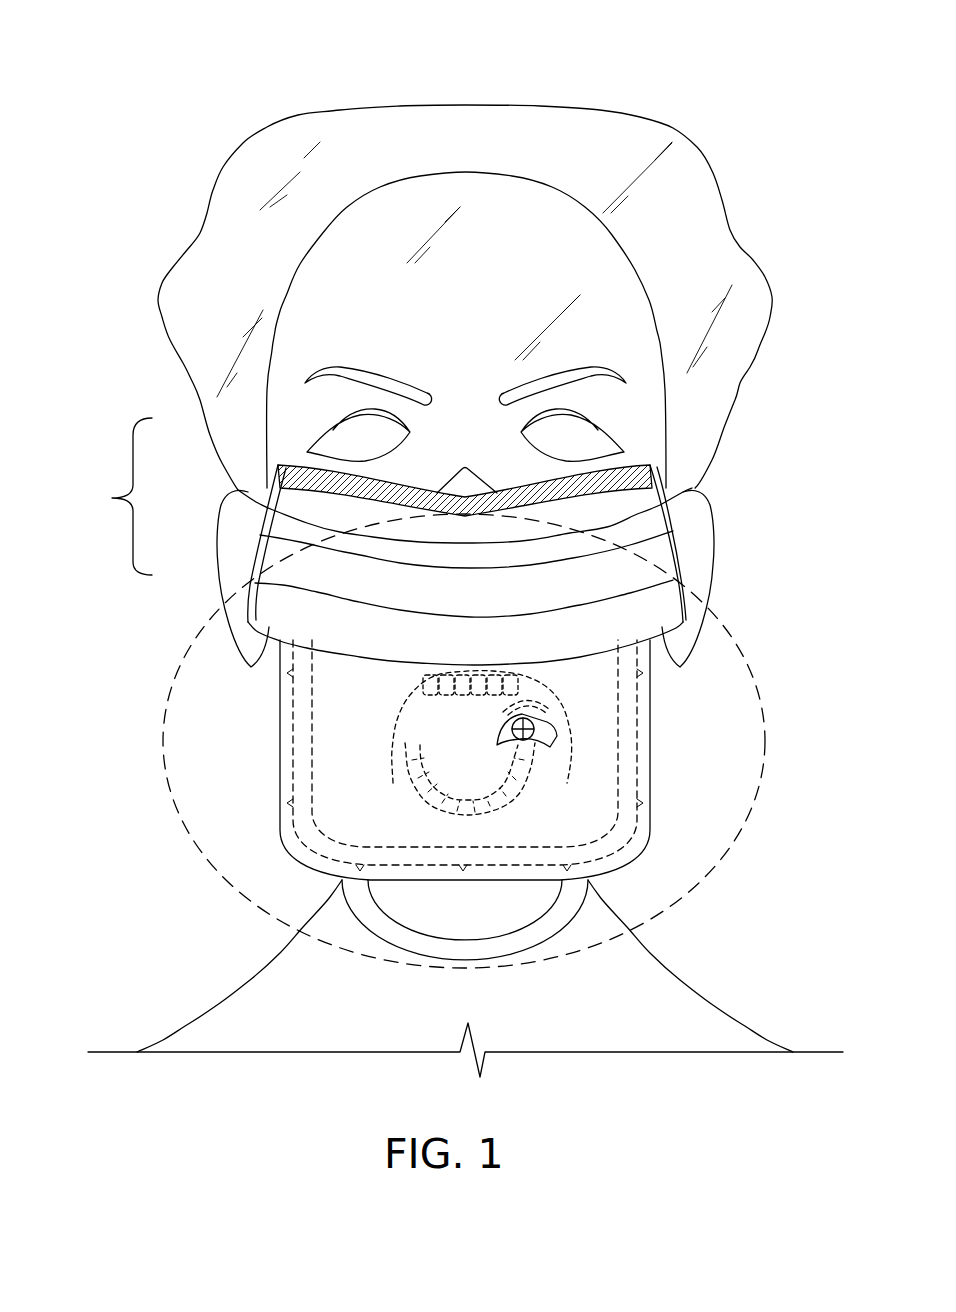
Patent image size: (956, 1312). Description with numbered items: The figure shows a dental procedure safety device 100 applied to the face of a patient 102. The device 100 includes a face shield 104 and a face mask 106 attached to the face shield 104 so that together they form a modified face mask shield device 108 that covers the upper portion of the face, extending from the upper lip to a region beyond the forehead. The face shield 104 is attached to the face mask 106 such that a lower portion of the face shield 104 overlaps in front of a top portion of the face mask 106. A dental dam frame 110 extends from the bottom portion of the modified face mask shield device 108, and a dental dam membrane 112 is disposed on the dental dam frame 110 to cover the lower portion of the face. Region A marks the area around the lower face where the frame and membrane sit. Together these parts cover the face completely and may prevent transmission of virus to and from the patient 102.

The dental procedure safety device 100 is at (152, 52).
The patient 102 is at (600, 282).
The face shield 104 is at (233, 423).
The face mask 106 is at (275, 554).
The modified face mask shield device 108 is at (112, 498).
The dental dam frame 110 is at (302, 759).
The dental dam membrane 112 is at (333, 718).
The region A is at (767, 740).